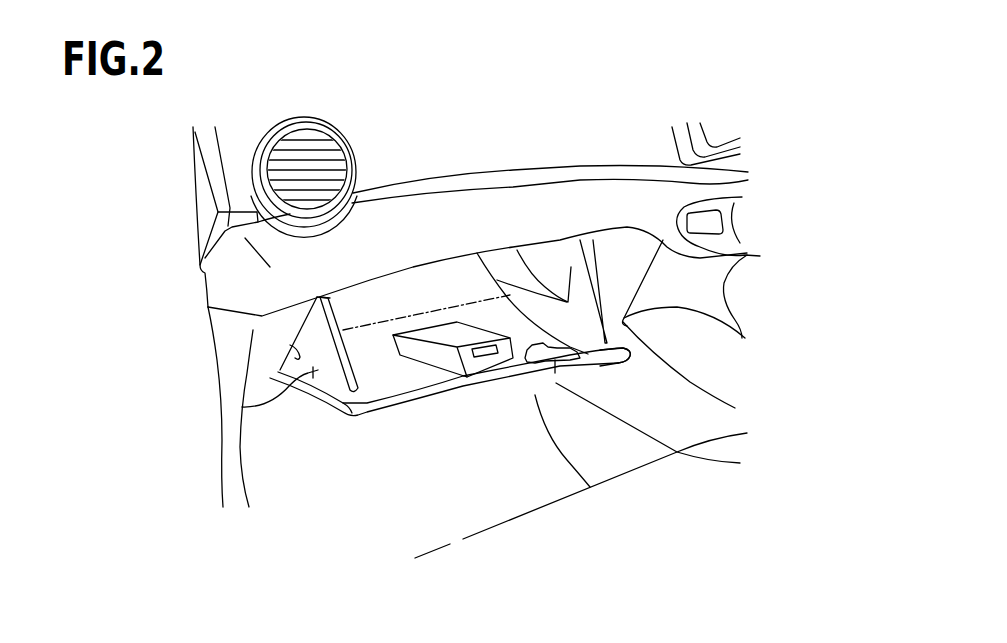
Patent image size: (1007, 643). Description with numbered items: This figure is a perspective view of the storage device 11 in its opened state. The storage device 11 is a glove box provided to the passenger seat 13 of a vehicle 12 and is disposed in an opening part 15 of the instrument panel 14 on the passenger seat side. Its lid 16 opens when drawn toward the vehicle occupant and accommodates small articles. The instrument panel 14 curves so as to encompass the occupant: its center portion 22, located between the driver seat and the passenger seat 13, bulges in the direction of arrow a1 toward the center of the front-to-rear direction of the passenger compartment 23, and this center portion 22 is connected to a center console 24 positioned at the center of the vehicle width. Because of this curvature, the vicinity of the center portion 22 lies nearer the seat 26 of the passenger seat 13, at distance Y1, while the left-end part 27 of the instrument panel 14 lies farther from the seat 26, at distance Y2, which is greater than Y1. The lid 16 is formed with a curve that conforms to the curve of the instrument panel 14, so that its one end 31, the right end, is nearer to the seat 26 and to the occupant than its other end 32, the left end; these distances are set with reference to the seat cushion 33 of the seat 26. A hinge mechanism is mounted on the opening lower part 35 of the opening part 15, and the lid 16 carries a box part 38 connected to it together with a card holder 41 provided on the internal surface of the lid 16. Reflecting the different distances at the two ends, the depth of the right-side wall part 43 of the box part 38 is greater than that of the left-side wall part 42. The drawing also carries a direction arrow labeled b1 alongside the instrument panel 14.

The storage device 11 is at (398, 300).
The vehicle 12 is at (172, 234).
The passenger seat 13 is at (265, 450).
The instrument panel 14 is at (556, 116).
The opening part 15 is at (430, 262).
The lid 16 is at (469, 397).
The center portion 22 is at (688, 102).
The passenger compartment 23 is at (816, 302).
The center console 24 is at (762, 377).
The seat 26 is at (763, 480).
The left-end part 27 is at (253, 330).
The one end 31 is at (620, 366).
The other end 32 is at (316, 397).
The seat cushion 33 is at (560, 505).
The opening lower part 35 is at (290, 345).
The box part 38 is at (297, 331).
The card holder 41 is at (554, 377).
The left-side wall part 42 is at (242, 407).
The right-side wall part 43 is at (575, 271).
The distance Y1 is at (577, 208).
The distance Y2 is at (333, 258).
The arrow a1 is at (786, 148).
The direction b1 is at (467, 200).